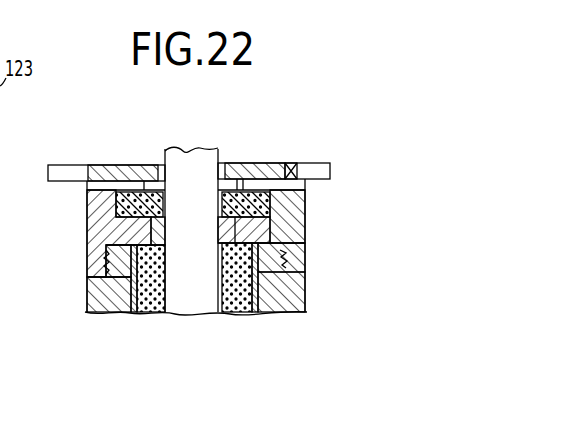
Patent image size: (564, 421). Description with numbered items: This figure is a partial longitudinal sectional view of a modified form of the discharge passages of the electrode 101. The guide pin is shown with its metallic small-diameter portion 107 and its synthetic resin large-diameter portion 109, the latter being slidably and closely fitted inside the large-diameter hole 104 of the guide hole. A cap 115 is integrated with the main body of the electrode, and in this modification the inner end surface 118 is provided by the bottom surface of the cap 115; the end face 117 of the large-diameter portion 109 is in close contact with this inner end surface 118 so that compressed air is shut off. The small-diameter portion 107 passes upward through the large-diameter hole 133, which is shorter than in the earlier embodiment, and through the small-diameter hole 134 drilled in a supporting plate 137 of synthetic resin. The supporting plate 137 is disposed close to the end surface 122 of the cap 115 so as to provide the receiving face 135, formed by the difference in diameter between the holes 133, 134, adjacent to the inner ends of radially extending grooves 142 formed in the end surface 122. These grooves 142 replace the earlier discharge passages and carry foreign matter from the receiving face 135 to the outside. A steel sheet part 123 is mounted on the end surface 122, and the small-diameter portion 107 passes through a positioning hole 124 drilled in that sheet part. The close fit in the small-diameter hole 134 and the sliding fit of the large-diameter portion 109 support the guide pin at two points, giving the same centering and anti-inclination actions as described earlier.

The electrode 101 is at (73, 311).
The large-diameter hole 104 is at (158, 300).
The small-diameter portion 107 is at (222, 300).
The large-diameter portion 109 is at (245, 294).
The cap 115 is at (90, 250).
The end face 117 is at (295, 253).
The inner end surface 118 is at (248, 252).
The end surface 122 is at (286, 170).
The steel sheet part 123 is at (331, 170).
The positioning hole 124 is at (150, 186).
The large-diameter hole 133 is at (154, 179).
The small-diameter hole 134 is at (172, 196).
The receiving face 135 is at (240, 185).
The supporting plate 137 is at (248, 243).
The grooves 142 is at (100, 196).